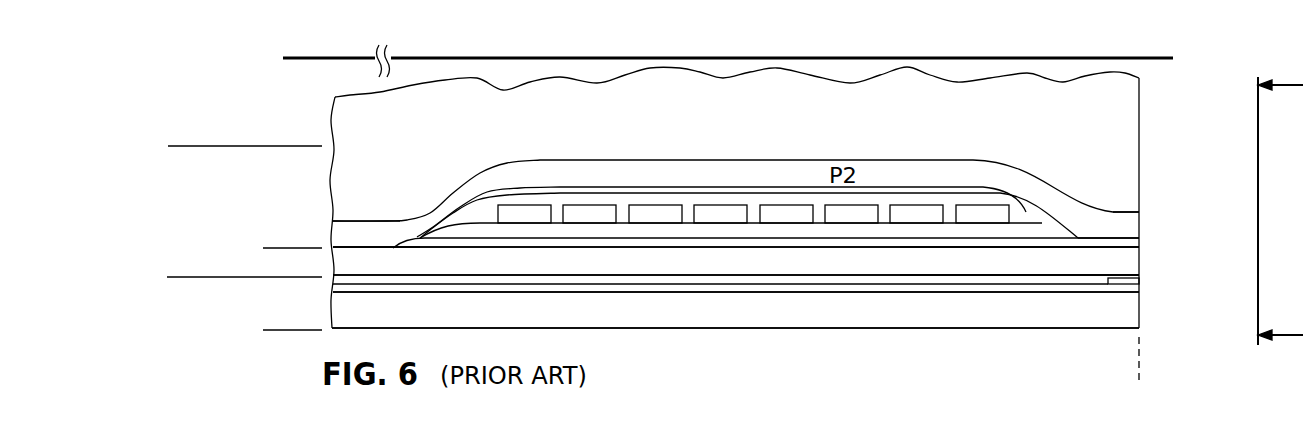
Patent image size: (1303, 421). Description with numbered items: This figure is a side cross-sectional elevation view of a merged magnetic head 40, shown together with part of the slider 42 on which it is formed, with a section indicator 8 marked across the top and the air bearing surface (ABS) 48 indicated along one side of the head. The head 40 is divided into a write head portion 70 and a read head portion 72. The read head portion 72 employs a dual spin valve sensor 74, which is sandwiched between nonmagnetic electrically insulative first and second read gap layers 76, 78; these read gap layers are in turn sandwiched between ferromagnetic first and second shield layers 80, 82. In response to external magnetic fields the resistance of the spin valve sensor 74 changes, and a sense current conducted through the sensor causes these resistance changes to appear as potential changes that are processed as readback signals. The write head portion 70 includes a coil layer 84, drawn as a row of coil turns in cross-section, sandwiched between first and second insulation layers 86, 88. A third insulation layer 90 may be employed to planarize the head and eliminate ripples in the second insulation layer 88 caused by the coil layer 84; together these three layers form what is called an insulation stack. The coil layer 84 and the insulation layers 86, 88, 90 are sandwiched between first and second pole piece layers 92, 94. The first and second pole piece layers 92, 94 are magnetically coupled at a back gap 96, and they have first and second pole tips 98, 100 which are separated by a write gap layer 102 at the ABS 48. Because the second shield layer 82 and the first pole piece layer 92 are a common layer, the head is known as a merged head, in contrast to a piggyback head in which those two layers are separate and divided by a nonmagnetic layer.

The section line 8- 8 is at (1166, 50).
The merged magnetic head 40 is at (313, 110).
The slider body 42 is at (1122, 112).
The air bearing surface (ABS) 48 is at (1139, 373).
The write head portion 70 is at (279, 236).
The read head portion 72 is at (279, 342).
The dual spin valve sensor 74 is at (1139, 282).
The first read gap layer 76 is at (802, 290).
The second read gap layer 78 is at (770, 272).
The first shield layer 80 is at (878, 313).
The second shield layer 82 is at (736, 316).
The first pole piece layer 92 is at (983, 260).
The coil layer 84 is at (783, 210).
The first insulation layer 86 is at (662, 232).
The second insulation layer 88 is at (1025, 212).
The third insulation layer 90 is at (565, 190).
The second pole piece layer 94 is at (892, 170).
The back gap 96 is at (365, 248).
The first pole tip 98 is at (1139, 262).
The second pole tip 100 is at (1130, 222).
The write gap layer 102 is at (1139, 240).